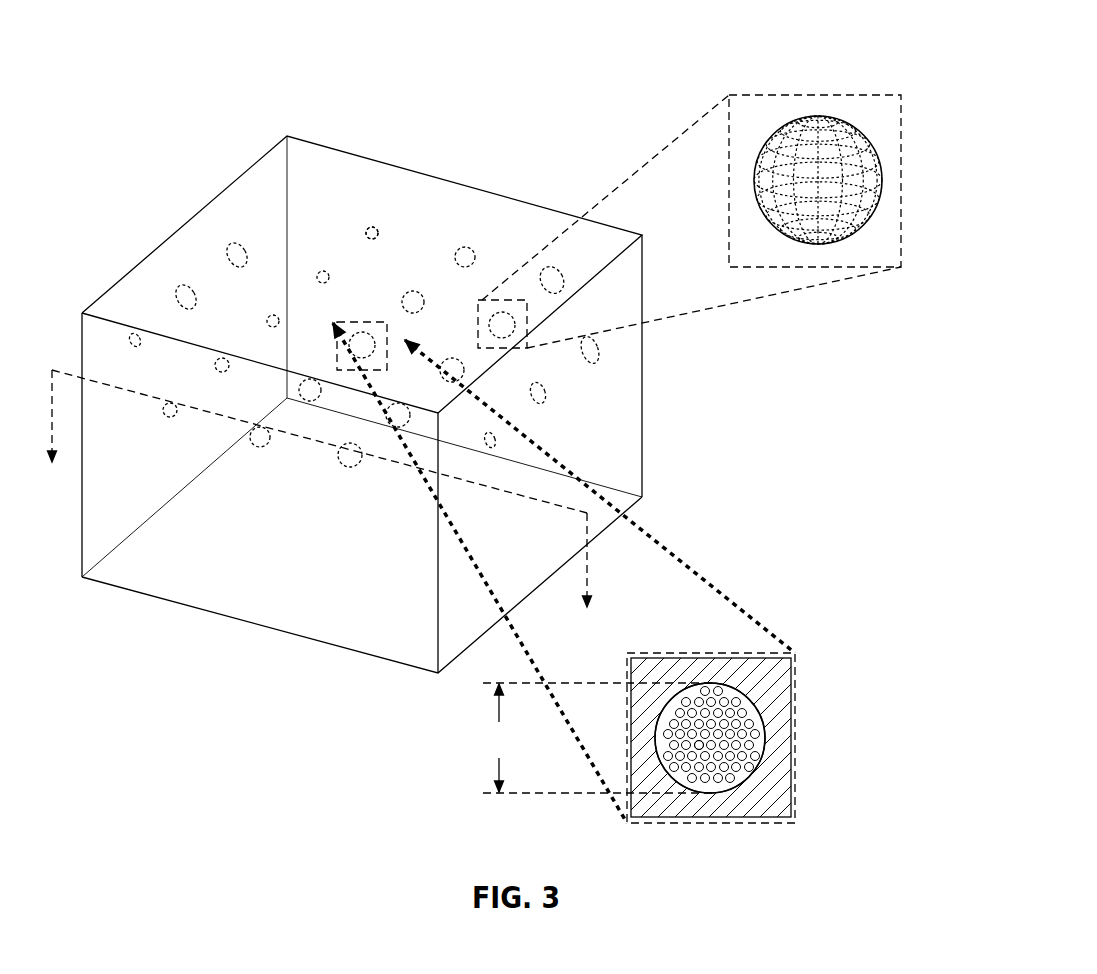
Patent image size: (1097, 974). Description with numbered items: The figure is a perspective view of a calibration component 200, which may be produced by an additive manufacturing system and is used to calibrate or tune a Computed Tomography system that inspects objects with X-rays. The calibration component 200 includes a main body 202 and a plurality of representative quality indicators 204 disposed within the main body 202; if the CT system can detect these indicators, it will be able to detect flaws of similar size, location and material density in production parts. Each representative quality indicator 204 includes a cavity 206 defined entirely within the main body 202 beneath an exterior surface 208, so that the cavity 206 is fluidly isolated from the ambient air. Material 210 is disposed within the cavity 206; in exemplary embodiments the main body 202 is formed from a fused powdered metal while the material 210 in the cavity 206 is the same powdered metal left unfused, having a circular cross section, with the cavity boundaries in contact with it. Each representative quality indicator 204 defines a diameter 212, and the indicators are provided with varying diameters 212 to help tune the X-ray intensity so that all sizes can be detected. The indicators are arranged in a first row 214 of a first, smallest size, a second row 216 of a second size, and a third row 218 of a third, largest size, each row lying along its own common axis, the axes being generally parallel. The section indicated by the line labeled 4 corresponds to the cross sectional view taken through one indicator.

The calibration component 200 is at (212, 76).
The main body 202 is at (183, 248).
The representative quality indicator 204 is at (480, 312).
The cavity 206 is at (760, 221).
The exterior surface 208 is at (630, 432).
The material 210 is at (700, 745).
The diameter 212 is at (595, 738).
The first row 214 is at (380, 207).
The second row 216 is at (485, 228).
The third row 218 is at (580, 240).
The section line 4- 4 is at (319, 508).